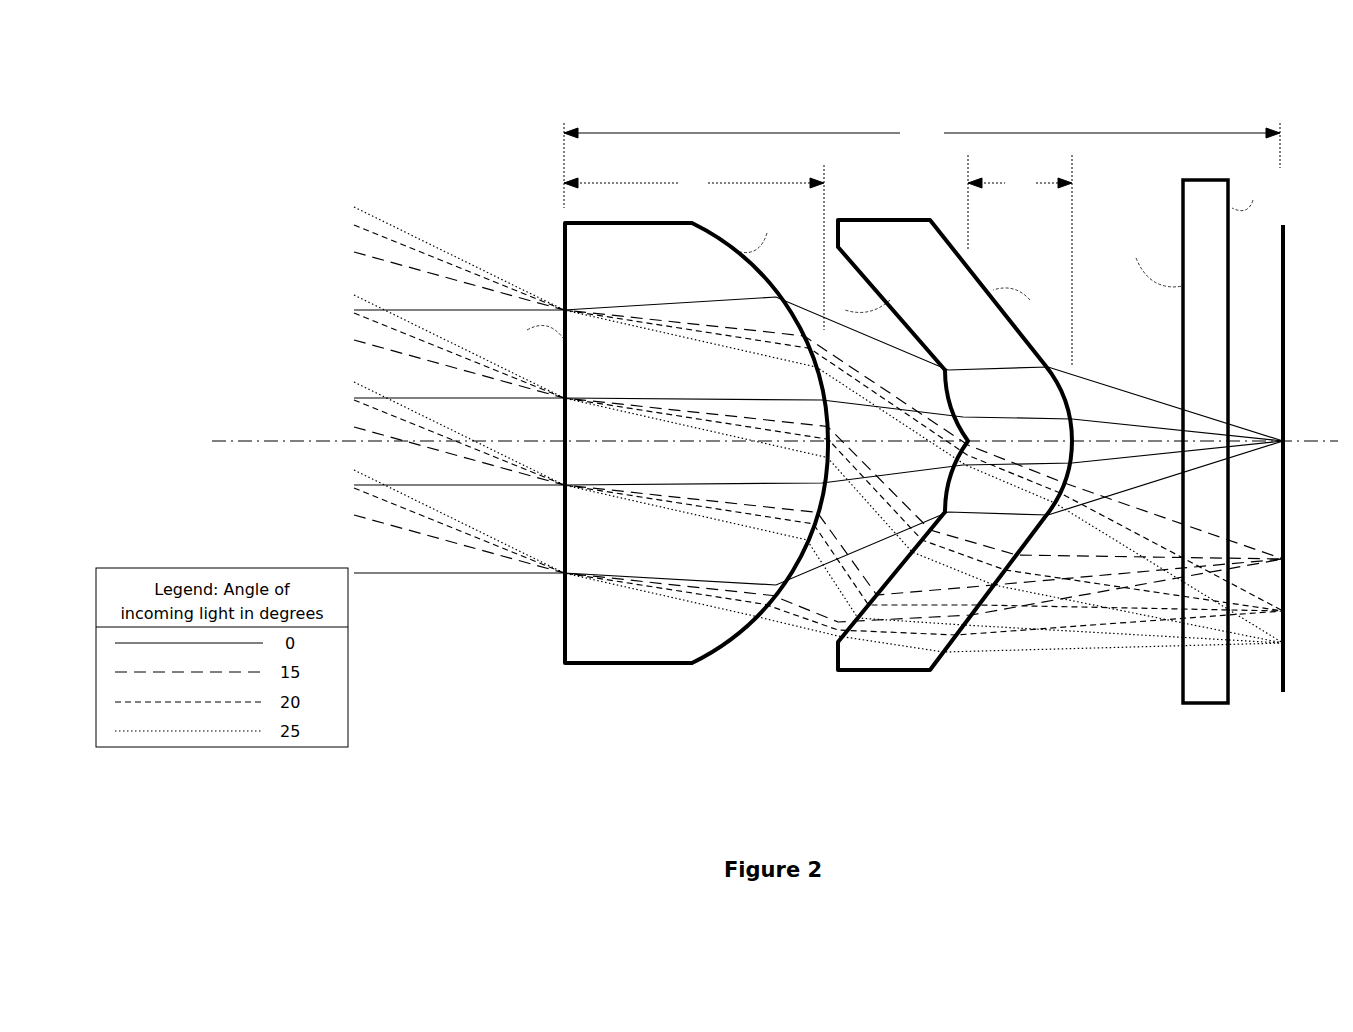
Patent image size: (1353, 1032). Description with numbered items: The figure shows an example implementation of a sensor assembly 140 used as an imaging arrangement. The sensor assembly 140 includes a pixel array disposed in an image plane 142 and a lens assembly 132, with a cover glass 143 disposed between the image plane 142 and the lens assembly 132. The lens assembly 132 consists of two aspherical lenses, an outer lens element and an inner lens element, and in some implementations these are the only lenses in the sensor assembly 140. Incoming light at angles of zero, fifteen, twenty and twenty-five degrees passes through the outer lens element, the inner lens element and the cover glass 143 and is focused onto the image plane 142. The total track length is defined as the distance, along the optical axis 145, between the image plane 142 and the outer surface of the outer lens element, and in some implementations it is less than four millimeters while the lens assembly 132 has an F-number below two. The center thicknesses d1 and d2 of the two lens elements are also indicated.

The sensor assembly 140 is at (362, 150).
The optical axis 145 is at (302, 437).
The lens assembly 132 is at (763, 514).
The cover glass 143 is at (1205, 686).
The image plane 142 is at (1280, 674).